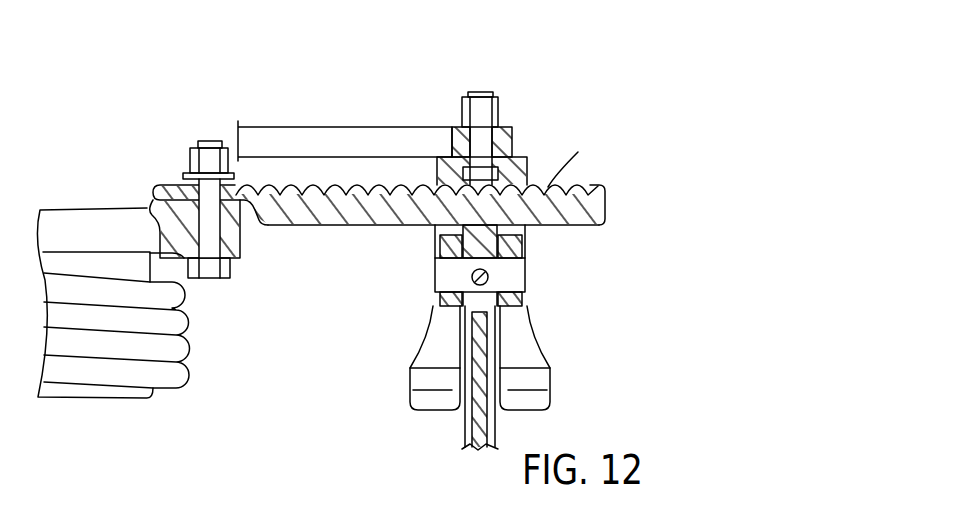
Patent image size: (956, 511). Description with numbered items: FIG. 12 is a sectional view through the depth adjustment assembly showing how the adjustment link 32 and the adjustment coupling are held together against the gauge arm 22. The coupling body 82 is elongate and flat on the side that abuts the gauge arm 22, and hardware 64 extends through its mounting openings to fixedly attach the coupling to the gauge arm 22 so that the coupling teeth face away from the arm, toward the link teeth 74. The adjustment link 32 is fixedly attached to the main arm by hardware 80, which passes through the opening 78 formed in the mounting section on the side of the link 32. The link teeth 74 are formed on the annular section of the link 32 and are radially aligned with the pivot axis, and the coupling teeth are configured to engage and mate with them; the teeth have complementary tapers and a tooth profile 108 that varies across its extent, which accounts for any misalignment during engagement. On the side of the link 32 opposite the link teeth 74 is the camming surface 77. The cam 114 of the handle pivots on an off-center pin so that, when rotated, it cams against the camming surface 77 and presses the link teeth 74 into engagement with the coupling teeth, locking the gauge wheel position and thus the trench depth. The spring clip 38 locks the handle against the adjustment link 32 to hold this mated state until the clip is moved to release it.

The gauge arm 22 is at (363, 126).
The adjustment link 32 is at (606, 213).
The spring clip 38 is at (543, 349).
The hardware 64 is at (477, 147).
The link teeth 74 is at (343, 190).
The camming surface 77 is at (588, 226).
The opening 78 is at (188, 187).
The hardware 80 is at (207, 165).
The coupling body 82 is at (442, 166).
The tooth profile 108 is at (483, 181).
The cam 114 is at (485, 242).